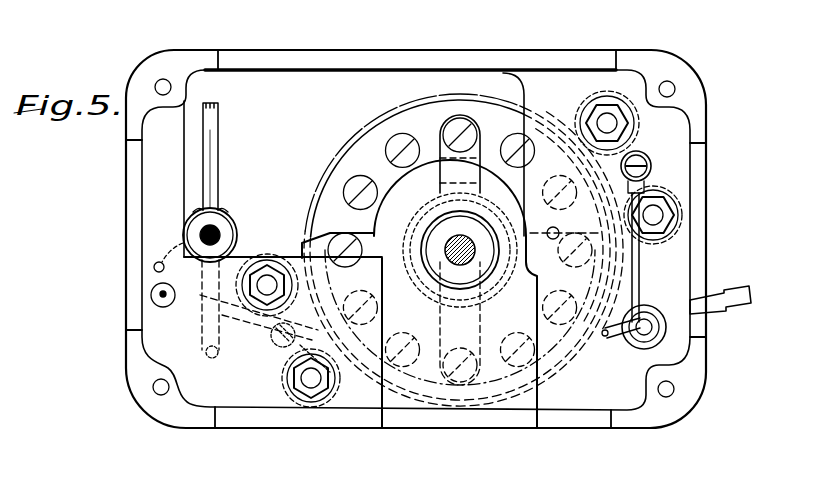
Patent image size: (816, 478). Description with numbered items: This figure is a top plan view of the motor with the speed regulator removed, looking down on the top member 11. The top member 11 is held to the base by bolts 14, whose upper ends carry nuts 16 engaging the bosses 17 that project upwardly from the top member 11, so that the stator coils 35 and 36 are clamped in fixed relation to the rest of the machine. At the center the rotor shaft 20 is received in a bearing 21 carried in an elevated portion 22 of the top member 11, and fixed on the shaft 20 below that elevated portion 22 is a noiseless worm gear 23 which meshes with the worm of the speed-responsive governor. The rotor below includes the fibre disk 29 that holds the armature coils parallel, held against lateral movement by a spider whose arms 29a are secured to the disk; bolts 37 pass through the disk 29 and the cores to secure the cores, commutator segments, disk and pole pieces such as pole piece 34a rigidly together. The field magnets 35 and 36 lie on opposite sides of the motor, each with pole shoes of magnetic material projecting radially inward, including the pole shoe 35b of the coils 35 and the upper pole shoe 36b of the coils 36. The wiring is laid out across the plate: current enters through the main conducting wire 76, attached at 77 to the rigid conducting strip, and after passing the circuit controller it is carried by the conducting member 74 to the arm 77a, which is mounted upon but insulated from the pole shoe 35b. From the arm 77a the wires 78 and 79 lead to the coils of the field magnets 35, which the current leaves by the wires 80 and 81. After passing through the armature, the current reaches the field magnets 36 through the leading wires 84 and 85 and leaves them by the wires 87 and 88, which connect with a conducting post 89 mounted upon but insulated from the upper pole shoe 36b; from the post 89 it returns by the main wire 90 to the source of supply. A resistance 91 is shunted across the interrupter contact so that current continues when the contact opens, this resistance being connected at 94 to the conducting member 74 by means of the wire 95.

The top member 11 is at (648, 158).
The bolts 14 is at (267, 282).
The nuts 16 is at (273, 275).
The bosses 17 is at (303, 402).
The rotor shaft 20 is at (462, 258).
The bearing 21 is at (437, 206).
The elevated portion 22 is at (485, 418).
The noiseless worm gear 23 is at (484, 290).
The fibre disk 29 is at (379, 140).
The spider arms 29a is at (489, 132).
The pole piece 34a is at (350, 143).
The field magnet 35 is at (254, 258).
The pole shoe 35b is at (384, 405).
The field magnet 36 is at (590, 100).
The upper pole shoe 36b is at (567, 120).
The bolts 37 is at (409, 137).
The conducting member 74 is at (217, 127).
The main conducting wire 76 is at (612, 340).
The attachment point 77 is at (720, 300).
The arm 77a is at (247, 350).
The wire 78 is at (245, 309).
The wire 79 is at (255, 360).
The wire 80 is at (308, 303).
The wire 81 is at (336, 320).
The leading wire 84 is at (545, 207).
The leading wire 85 is at (567, 214).
The wire 87 is at (656, 155).
The wire 88 is at (662, 240).
The conducting post 89 is at (650, 163).
The main wire 90 is at (630, 285).
The resistance 91 is at (221, 208).
The connection point 94 is at (206, 212).
The wire 95 is at (145, 255).